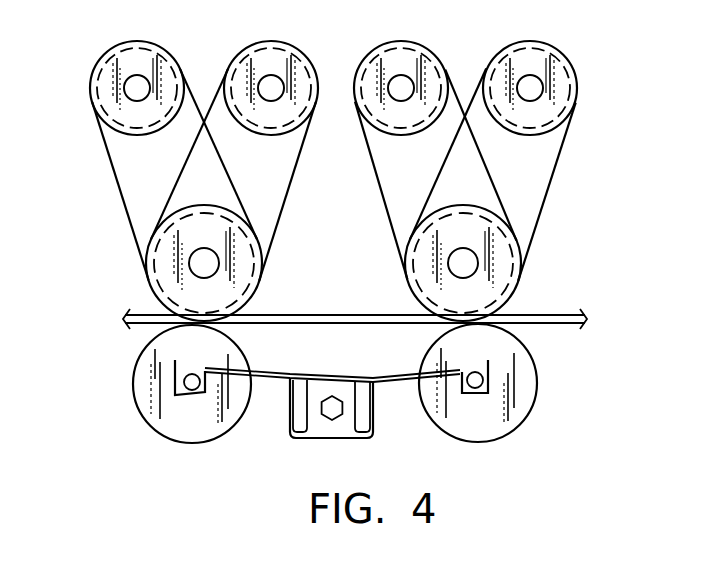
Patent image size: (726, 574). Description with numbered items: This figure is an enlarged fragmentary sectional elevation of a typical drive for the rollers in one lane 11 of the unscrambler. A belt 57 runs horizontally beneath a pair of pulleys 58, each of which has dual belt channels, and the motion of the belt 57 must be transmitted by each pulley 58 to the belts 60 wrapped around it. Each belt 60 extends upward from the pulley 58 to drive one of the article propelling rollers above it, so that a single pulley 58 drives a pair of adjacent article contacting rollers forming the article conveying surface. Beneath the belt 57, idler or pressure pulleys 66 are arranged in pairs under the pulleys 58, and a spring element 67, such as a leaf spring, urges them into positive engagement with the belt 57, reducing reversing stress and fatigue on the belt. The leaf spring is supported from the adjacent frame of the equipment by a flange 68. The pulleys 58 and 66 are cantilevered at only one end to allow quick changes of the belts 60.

The lane 11 is at (307, 61).
The belt 57 is at (573, 317).
The pulley 58 is at (243, 282).
The belt 60 is at (116, 182).
The pressure pulley 66 is at (138, 378).
The spring element 67 is at (395, 382).
The flange 68 is at (320, 428).